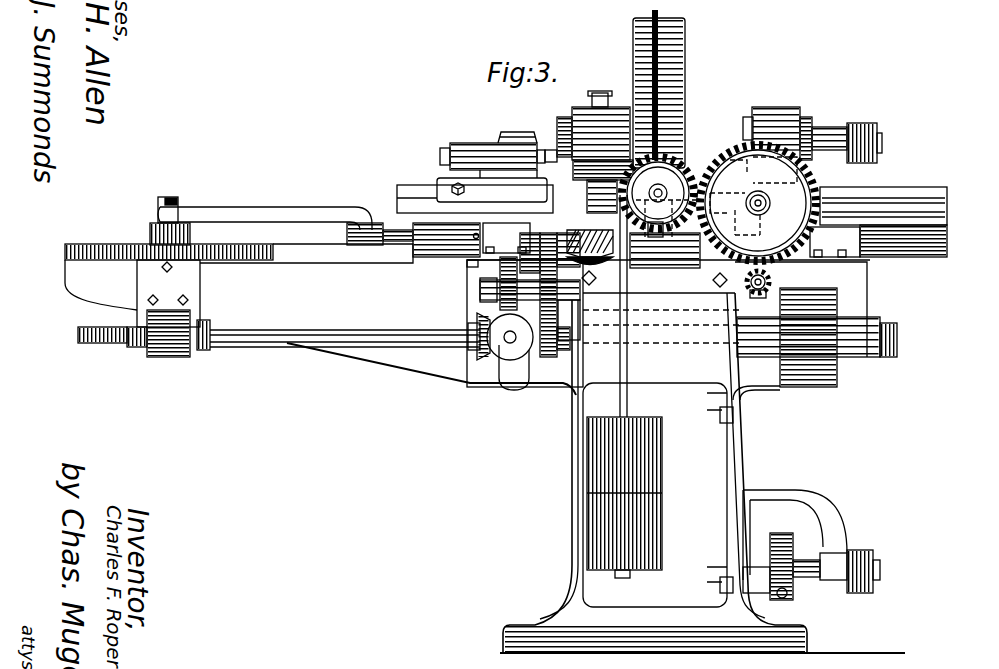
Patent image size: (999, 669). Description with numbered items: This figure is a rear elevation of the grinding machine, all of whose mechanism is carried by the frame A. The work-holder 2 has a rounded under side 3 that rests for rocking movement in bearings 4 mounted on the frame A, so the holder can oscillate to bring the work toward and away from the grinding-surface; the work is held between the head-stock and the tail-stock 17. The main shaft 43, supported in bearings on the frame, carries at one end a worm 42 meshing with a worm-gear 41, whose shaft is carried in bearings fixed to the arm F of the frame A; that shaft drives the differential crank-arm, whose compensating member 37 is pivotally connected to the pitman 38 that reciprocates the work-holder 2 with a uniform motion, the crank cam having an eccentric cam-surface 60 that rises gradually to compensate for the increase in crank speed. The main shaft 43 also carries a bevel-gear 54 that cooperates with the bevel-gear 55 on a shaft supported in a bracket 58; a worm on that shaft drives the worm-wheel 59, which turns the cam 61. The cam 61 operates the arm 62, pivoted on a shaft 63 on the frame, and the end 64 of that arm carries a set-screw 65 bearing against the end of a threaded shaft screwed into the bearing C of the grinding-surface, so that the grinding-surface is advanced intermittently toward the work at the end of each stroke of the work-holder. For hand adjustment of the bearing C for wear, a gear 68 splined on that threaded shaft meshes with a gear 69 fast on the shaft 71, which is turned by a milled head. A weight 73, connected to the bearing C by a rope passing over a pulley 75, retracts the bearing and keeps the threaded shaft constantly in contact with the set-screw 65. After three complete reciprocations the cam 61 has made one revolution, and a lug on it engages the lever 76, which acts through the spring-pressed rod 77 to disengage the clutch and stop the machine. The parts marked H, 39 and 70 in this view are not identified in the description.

The vertical shaft column H is at (686, 32).
The bearing of the grinding-surface C is at (728, 112).
The gear 68 is at (667, 157).
The gear 69 is at (814, 192).
The set-screw 65 is at (719, 201).
The tail-stock 17 is at (477, 172).
The bearings 4 is at (671, 240).
The work-holder 2 is at (942, 212).
The rounded portion 3 is at (947, 240).
The spring-pressed rod 77 is at (822, 318).
The pinion 70 is at (770, 284).
The shaft 71 is at (761, 303).
The end of arm 64 is at (668, 232).
The pulley 75 is at (635, 306).
The frame A is at (570, 437).
The weight 73 is at (664, 486).
The bracket 58 is at (557, 383).
The worm-wheel 59 is at (482, 278).
The cam 61 is at (480, 293).
The bevel-gear 55 is at (498, 352).
The arm 62 is at (523, 365).
The bevel-gear 54 is at (470, 343).
The shaft 63 is at (568, 322).
The lever 76 is at (570, 330).
The eccentric cam-surface 60 is at (135, 257).
The worm 42 is at (172, 358).
The worm-gear 41 is at (108, 345).
The main shaft 43 is at (368, 340).
The arm of the frame F is at (307, 317).
The pitman 38 is at (268, 213).
The arm bracket 39 is at (364, 222).
The compensating member 37 is at (152, 228).